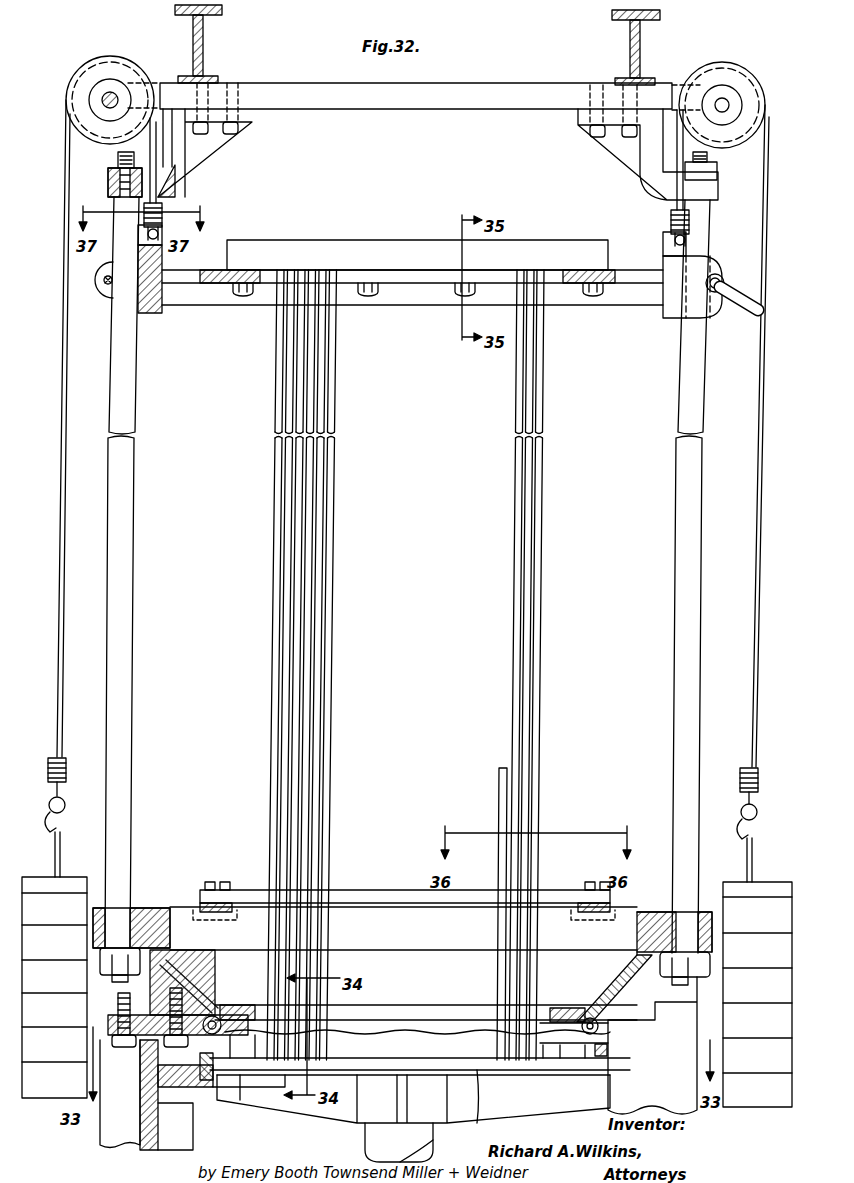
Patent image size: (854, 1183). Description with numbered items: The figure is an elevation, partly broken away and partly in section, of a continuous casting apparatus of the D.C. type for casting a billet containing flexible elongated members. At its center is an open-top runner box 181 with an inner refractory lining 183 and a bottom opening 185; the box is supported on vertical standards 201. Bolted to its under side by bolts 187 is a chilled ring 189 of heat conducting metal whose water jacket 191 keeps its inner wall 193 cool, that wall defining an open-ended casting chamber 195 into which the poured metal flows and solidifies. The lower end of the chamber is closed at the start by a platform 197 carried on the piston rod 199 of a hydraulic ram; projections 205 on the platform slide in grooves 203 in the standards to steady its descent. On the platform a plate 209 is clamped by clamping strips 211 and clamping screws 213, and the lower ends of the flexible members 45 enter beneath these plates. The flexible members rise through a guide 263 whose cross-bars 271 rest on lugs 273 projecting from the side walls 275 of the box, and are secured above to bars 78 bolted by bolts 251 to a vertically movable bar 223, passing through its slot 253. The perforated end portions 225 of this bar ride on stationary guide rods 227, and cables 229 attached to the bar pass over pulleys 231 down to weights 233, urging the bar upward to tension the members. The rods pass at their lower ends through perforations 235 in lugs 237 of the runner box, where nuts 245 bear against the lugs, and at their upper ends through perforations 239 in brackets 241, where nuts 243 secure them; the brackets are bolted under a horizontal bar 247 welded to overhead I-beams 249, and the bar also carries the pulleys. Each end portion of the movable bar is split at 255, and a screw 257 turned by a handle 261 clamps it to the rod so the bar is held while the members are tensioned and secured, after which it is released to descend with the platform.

The flexible members 45 is at (272, 656).
The bars 78 is at (318, 247).
The runner box 181 is at (165, 960).
The refractory lining 183 is at (182, 975).
The bottom opening 185 is at (255, 1008).
The bolts 187 is at (220, 1016).
The chilled ring 189 is at (249, 1081).
The water jacket 191 is at (548, 1065).
The inner wall 193 is at (262, 1062).
The casting chamber 195 is at (390, 1056).
The platform 197 is at (476, 1125).
The piston rod 199 is at (366, 1137).
The standards 201 is at (125, 1128).
The grooves 203 is at (178, 1138).
The projections 205 is at (190, 1115).
The plate 209 is at (425, 1068).
The clamping strips 211 is at (608, 1052).
The clamping screws 213 is at (195, 1093).
The bar 223 is at (222, 306).
The perforated end portions 225 is at (150, 313).
The guide rods 227 is at (137, 398).
The flexible cables 229 is at (165, 150).
The pulleys 231 is at (93, 74).
The weights 233 is at (48, 820).
The perforations 235 is at (63, 836).
The lugs 237 is at (85, 930).
The perforations 239 is at (108, 187).
The brackets 241 is at (228, 132).
The nuts 243 is at (118, 162).
The nuts 245 is at (93, 966).
The horizontal bar 247 is at (410, 112).
The I-beams 249 is at (205, 40).
The bolts 251 is at (447, 298).
The slot 253 is at (552, 285).
The split 255 is at (104, 298).
The screw 257 is at (103, 278).
The handle 261 is at (752, 316).
The guide 263 is at (380, 880).
The cross-bars 271 is at (630, 935).
The lugs 273 is at (590, 918).
The side walls 275 is at (622, 920).